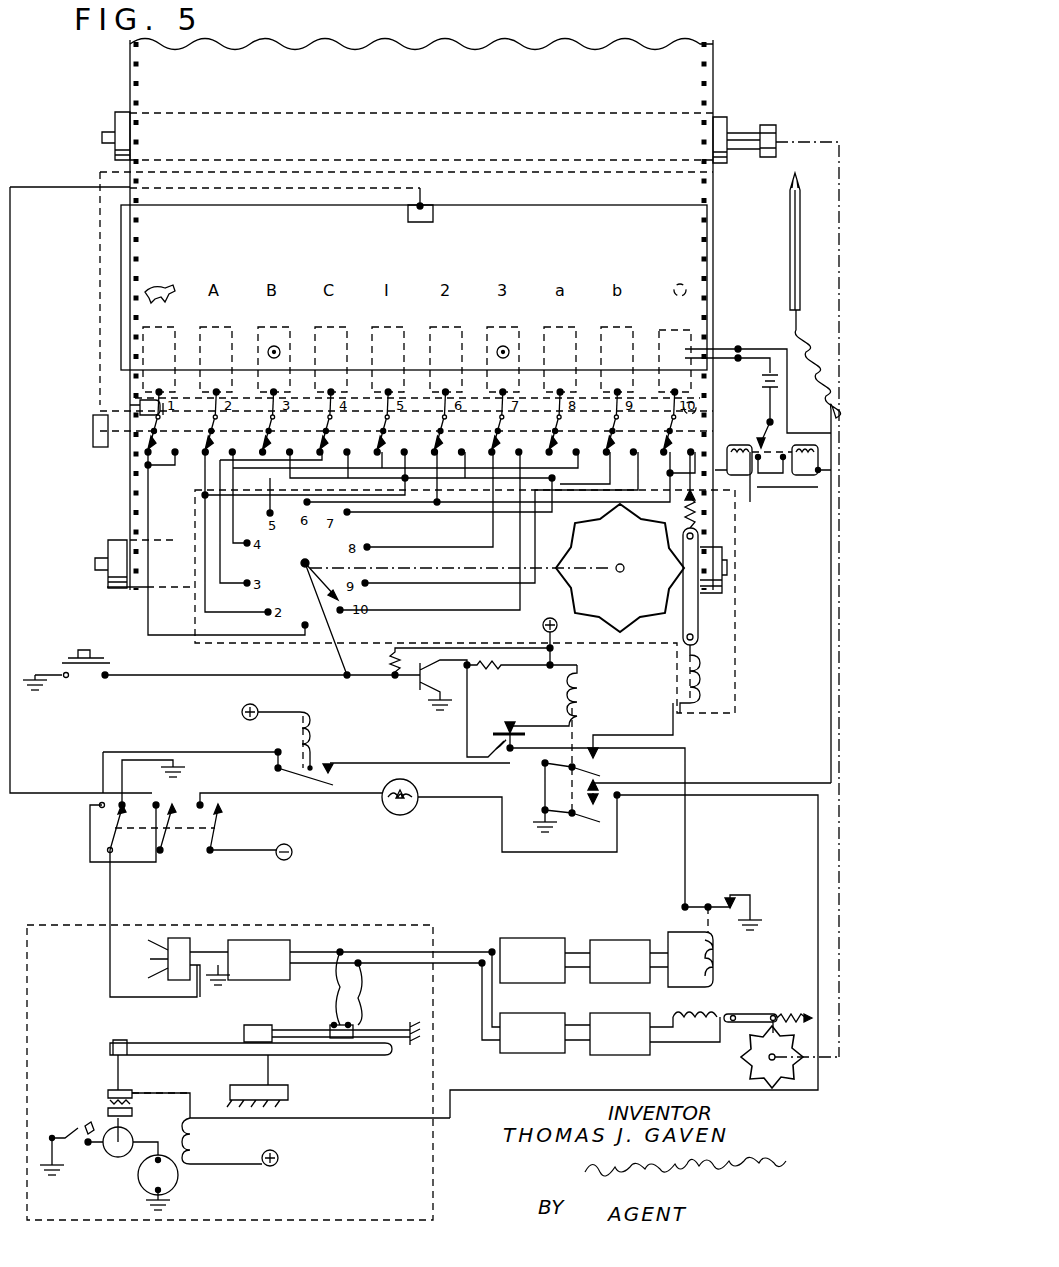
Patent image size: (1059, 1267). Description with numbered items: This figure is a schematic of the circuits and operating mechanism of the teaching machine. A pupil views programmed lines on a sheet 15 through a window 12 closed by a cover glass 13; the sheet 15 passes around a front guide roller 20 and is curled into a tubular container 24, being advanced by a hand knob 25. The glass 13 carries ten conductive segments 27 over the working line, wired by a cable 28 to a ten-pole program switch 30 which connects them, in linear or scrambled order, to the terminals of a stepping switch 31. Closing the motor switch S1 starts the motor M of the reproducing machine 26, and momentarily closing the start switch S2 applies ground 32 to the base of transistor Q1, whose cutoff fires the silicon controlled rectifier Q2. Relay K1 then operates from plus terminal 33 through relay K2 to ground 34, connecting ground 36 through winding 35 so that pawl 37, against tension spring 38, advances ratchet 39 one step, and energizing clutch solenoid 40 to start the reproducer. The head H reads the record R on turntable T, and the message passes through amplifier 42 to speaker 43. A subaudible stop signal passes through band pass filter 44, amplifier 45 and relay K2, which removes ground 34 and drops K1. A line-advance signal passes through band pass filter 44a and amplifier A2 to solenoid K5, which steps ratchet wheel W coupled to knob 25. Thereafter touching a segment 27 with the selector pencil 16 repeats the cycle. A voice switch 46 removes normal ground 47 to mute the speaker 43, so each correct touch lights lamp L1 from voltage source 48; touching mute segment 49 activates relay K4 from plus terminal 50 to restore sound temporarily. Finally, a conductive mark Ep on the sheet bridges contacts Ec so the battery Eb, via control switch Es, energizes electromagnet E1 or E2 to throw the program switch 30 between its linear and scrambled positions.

The window opening 12 is at (342, 205).
The cover glass 13 is at (258, 165).
The sheet 15 is at (713, 193).
The manual selector device 16 is at (791, 262).
The front guide roller 20 is at (108, 546).
The tubular container 24 is at (717, 120).
The hand knob 25 is at (772, 131).
The reproducing machine 26 is at (433, 1152).
The conductive segments 27 is at (210, 326).
The cable 28 is at (130, 405).
The program switch 30 is at (91, 449).
The stepping switch 31 is at (740, 638).
The ground 32 is at (44, 693).
The plus terminal 33 is at (561, 642).
The ground 34 is at (758, 920).
The winding 35 is at (703, 688).
The ground 36 is at (558, 834).
The pawl 37 is at (699, 616).
The tension spring 38 is at (700, 508).
The ratchet 39 is at (620, 568).
The clutch solenoid 40 is at (194, 1138).
The amplifier 42 is at (280, 940).
The speaker 43 is at (188, 938).
The band pass filter 44 is at (556, 926).
The band pass filter 44a is at (520, 1053).
The amplifier 45 is at (633, 940).
The voice switch 46 is at (92, 830).
The normal ground 47 is at (188, 770).
The voltage source 48 is at (290, 848).
The mute segment 49 is at (433, 215).
The plus terminal 50 is at (255, 708).
The motor switch S1 is at (68, 1132).
The start switch S2 is at (95, 652).
The transistor Q1 is at (483, 679).
The silicon controlled rectifier Q2 is at (517, 736).
The relay K1 is at (559, 695).
The relay K2 is at (703, 959).
The relay K4 is at (310, 743).
The solenoid K5 is at (742, 1011).
The lamp L1 is at (381, 816).
The ratchet wheel W is at (742, 1077).
The motor M is at (108, 1153).
The reproducer head H is at (325, 1023).
The record R is at (193, 1036).
The turntable T is at (311, 1052).
The contacts Ec is at (705, 345).
The source of potential Eb is at (752, 385).
The control switch Es is at (770, 432).
The electromagnet E1 is at (739, 467).
The electromagnet E2 is at (805, 467).
The conductive mark Ep is at (680, 283).
The AC source AC is at (158, 1182).
The amplifier A2 is at (655, 1034).